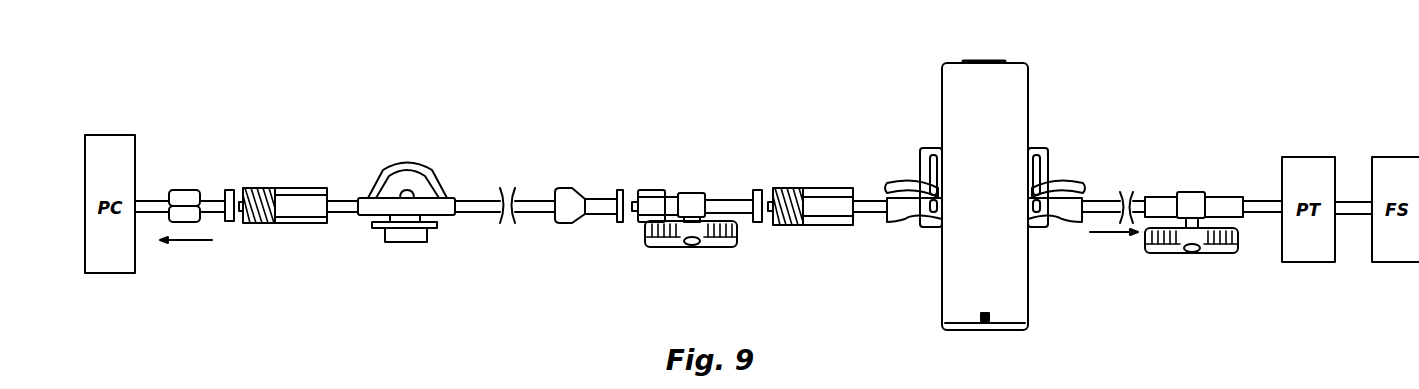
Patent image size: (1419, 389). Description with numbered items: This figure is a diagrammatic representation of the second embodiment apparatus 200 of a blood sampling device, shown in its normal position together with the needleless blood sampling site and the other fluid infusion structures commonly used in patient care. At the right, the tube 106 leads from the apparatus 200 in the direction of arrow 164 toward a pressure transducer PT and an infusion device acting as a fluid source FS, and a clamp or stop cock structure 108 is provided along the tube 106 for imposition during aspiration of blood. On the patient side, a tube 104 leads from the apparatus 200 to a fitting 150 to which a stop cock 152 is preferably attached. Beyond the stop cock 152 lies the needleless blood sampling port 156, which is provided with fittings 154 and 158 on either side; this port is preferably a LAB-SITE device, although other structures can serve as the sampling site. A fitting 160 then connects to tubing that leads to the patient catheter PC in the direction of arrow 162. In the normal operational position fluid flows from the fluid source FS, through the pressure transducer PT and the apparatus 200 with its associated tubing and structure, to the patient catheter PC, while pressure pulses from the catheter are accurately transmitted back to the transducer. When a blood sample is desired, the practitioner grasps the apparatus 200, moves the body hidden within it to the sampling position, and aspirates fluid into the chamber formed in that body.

The tube 104 is at (875, 213).
The tube 106 is at (1095, 200).
The stopcock valve 108 is at (1195, 189).
The fitting 150 is at (812, 175).
The stop cock 152 is at (696, 185).
The fitting 154 is at (588, 185).
The needleless blood sampling port 156 is at (429, 160).
The fitting 158 is at (306, 180).
The fitting 160 is at (196, 178).
The arrow 162 is at (195, 240).
The arrow 164 is at (1113, 232).
The second embodiment apparatus 200 is at (1053, 85).